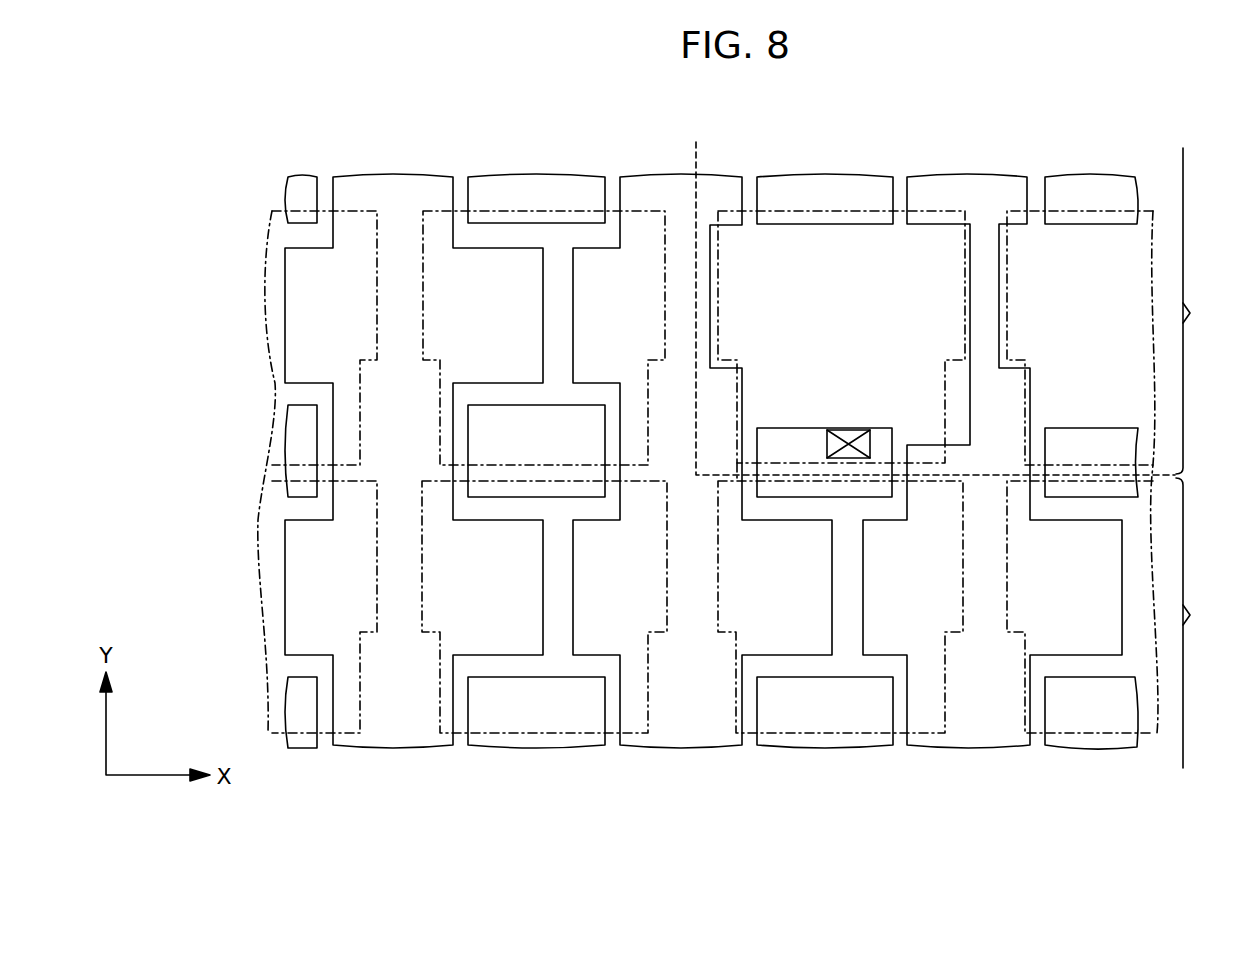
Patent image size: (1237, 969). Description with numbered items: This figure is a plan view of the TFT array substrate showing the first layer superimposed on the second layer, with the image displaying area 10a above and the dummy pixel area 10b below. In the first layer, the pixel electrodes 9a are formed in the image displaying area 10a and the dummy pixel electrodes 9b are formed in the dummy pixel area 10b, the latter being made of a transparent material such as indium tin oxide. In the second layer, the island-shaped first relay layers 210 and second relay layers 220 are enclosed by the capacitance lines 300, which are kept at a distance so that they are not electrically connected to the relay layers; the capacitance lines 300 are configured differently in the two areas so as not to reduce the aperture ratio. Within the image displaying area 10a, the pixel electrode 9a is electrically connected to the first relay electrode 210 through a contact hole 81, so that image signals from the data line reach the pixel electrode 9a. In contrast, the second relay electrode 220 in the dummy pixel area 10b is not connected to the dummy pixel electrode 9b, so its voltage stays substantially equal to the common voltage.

The pixel electrode 9a is at (968, 250).
The dummy pixel electrode 9b is at (414, 242).
The capacitance line 300 is at (545, 300).
The second relay layer 220 is at (563, 424).
The first relay layer 210 is at (773, 436).
The contact hole 81 is at (845, 433).
The image displaying area 10a is at (962, 308).
The dummy pixel area 10b is at (1202, 623).